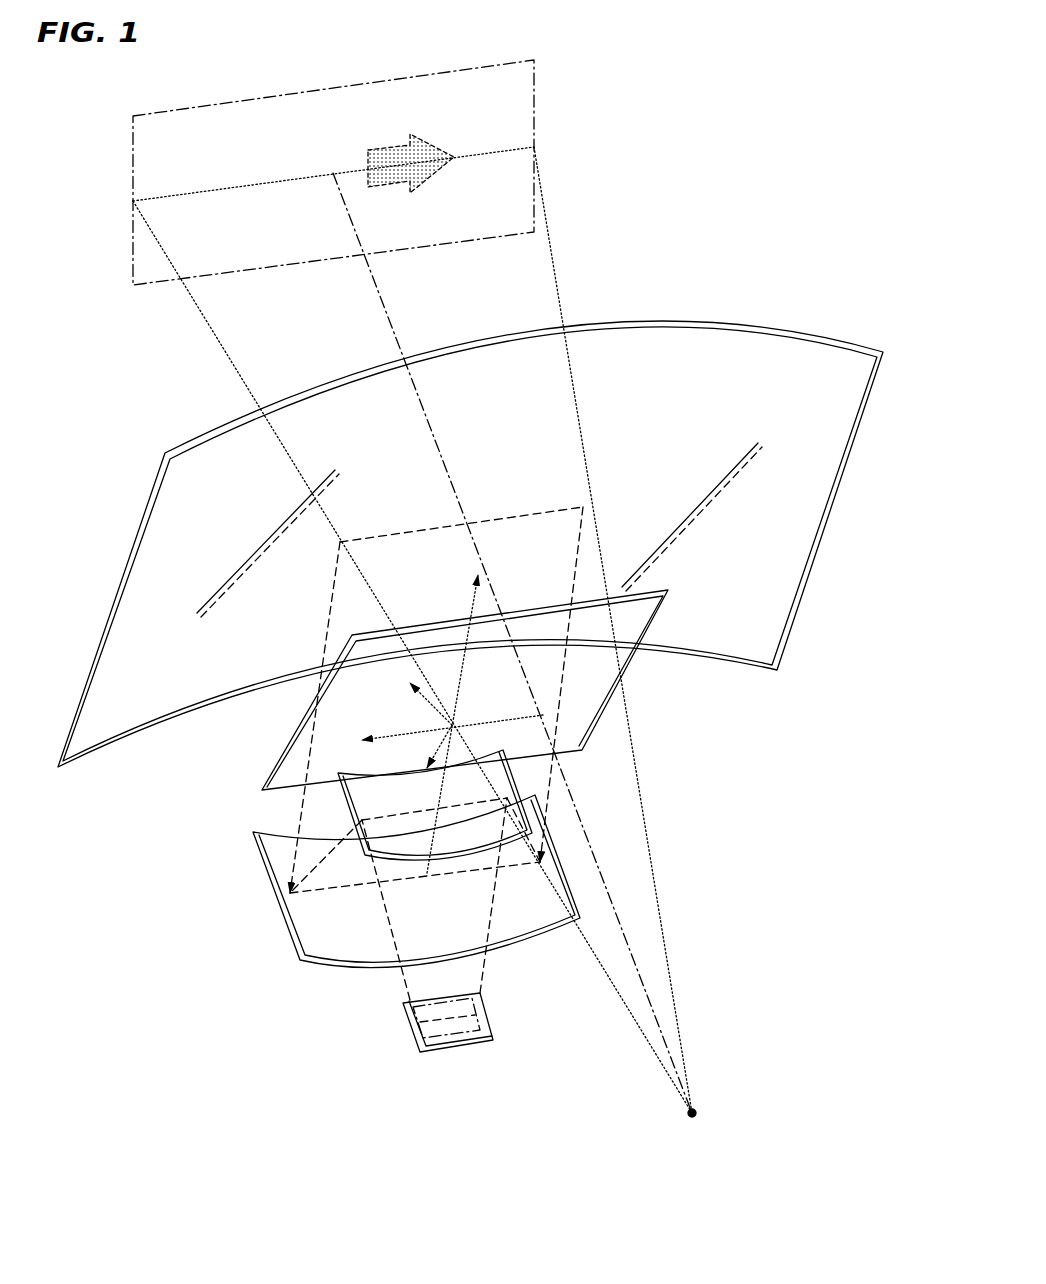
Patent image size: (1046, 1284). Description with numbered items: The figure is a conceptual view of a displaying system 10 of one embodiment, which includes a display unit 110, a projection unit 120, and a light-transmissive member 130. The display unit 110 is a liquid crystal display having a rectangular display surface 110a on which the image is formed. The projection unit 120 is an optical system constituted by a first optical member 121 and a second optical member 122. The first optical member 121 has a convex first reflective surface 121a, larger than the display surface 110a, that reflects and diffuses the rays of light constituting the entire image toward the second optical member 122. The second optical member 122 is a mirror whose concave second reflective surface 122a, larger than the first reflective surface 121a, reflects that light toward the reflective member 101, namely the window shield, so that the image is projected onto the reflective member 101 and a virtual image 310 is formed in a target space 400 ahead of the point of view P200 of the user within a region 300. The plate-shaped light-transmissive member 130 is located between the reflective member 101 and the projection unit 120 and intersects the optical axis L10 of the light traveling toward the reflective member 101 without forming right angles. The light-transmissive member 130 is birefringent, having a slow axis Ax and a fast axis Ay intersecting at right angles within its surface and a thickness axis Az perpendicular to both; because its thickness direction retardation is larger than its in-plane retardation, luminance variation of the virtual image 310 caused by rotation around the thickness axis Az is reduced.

The displaying system 10 is at (411, 780).
The reflective member 101 is at (707, 342).
The display unit 110 is at (486, 1015).
The display surface 110a is at (475, 1025).
The projection unit 120 is at (368, 875).
The first optical member 121 is at (372, 836).
The first reflective surface 121a is at (412, 862).
The second optical member 122 is at (387, 899).
The second reflective surface 122a is at (340, 932).
The light-transmissive member 130 is at (648, 617).
The virtual image display region 300 is at (377, 172).
The virtual image 310 is at (425, 140).
The target space 400 is at (394, 143).
The optical axis L10 is at (473, 603).
The viewpoint position P200 is at (698, 1120).
The slow axis Ax is at (424, 749).
The fast axis Ay is at (440, 723).
The thickness axis Az is at (416, 691).